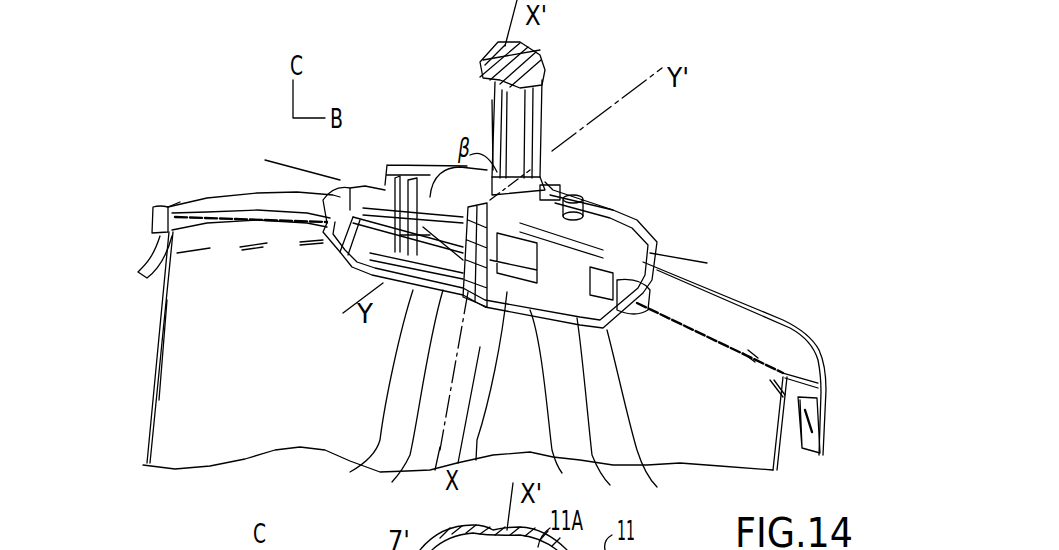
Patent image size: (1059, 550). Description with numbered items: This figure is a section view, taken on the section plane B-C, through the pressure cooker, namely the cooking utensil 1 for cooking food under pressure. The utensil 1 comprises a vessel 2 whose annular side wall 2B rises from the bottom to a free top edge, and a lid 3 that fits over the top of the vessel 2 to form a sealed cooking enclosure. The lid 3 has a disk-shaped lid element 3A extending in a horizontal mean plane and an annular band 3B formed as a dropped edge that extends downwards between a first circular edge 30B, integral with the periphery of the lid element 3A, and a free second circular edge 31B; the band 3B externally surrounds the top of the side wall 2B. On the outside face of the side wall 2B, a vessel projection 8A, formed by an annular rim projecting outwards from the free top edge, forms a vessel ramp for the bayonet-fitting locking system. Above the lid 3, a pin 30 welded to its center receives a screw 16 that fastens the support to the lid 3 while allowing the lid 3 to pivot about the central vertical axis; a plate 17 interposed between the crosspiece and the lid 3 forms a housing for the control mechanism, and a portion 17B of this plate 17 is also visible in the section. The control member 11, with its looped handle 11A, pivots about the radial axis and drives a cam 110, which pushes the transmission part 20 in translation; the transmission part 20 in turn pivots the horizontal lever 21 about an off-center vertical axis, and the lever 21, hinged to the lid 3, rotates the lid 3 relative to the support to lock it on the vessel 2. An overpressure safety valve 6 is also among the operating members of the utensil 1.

The cooking utensil 1 is at (690, 157).
The vessel 2 is at (205, 425).
The annular side wall 2B is at (162, 368).
The lid 3 is at (775, 340).
The disk-shaped lid element 3A is at (708, 305).
The annular band 3B is at (152, 208).
The overpressure safety valve 6 is at (477, 470).
The vessel projection 8A is at (803, 440).
The control member 11 is at (547, 82).
The looped handle 11A is at (487, 77).
The cam 110 is at (493, 167).
The screw 16 is at (547, 187).
The plate 17 is at (643, 413).
The guide portion 17B is at (357, 458).
The transmission part 20 is at (561, 401).
The horizontal lever 21 is at (608, 407).
The pin 30 is at (395, 480).
The first circular edge 30B is at (157, 205).
The free second circular edge 31B is at (138, 275).